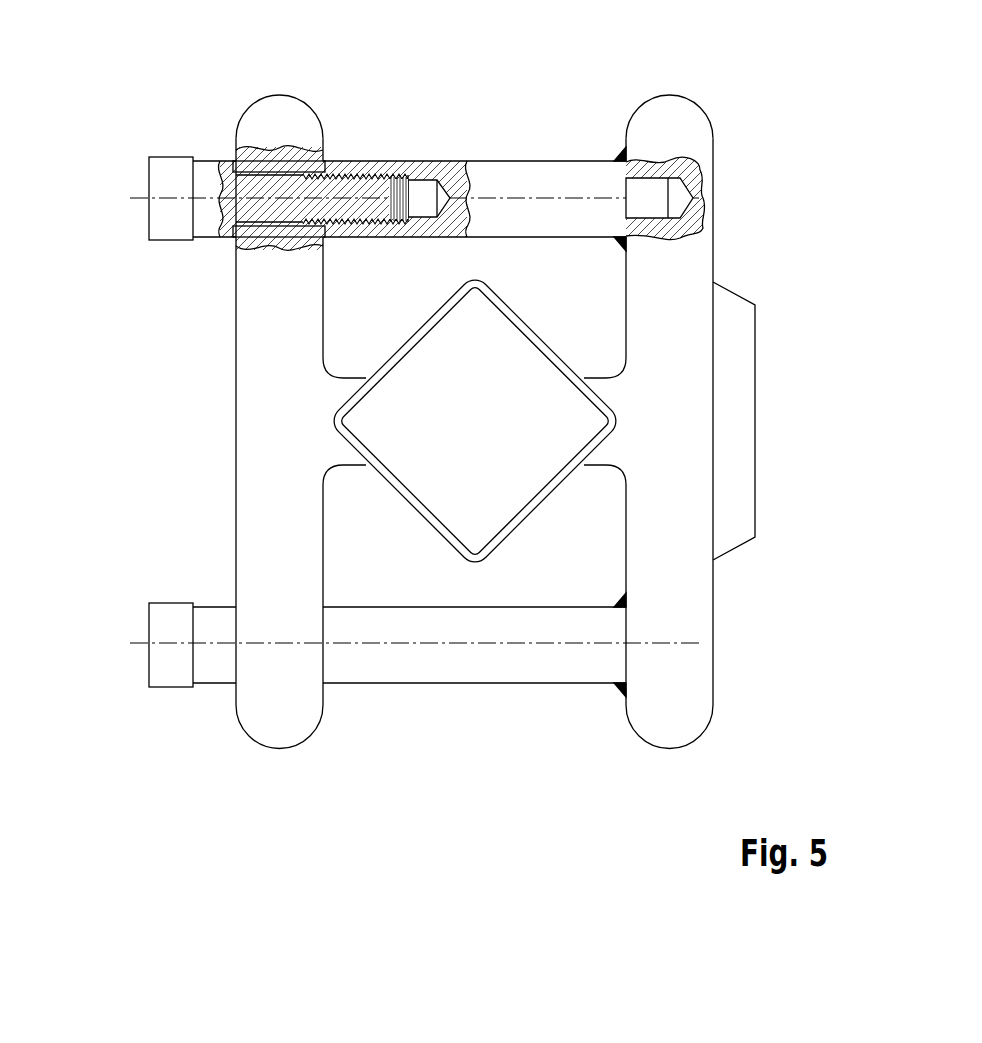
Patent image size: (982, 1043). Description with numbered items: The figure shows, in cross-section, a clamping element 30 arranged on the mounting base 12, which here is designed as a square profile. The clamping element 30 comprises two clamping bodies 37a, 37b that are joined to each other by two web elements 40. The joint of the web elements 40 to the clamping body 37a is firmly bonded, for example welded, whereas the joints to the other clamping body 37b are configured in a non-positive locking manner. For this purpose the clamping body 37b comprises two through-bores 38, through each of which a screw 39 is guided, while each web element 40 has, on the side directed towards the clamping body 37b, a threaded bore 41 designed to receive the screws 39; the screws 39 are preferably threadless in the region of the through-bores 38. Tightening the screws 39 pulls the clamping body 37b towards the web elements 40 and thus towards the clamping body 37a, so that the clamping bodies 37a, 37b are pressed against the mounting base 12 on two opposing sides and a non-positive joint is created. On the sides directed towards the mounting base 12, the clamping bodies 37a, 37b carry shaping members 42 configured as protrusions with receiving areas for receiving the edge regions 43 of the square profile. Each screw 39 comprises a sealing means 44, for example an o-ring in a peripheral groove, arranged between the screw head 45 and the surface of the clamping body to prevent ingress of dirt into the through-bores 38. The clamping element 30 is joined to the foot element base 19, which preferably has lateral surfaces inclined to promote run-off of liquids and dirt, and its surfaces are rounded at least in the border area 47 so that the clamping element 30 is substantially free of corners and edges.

The mounting base 12 is at (527, 333).
The foot element base 19 is at (745, 451).
The clamping element 30 is at (770, 65).
The clamping body 37a is at (713, 238).
The clamping body 37b is at (236, 494).
The through-bore 38 is at (275, 165).
The screw 39 is at (243, 205).
The web element 40 is at (528, 161).
The threaded bore 41 is at (402, 175).
The shaping member 42 is at (353, 467).
The edge region 43 is at (334, 420).
The sealing means 44 is at (233, 164).
The screw head 45 is at (157, 221).
The border area 47 is at (252, 100).